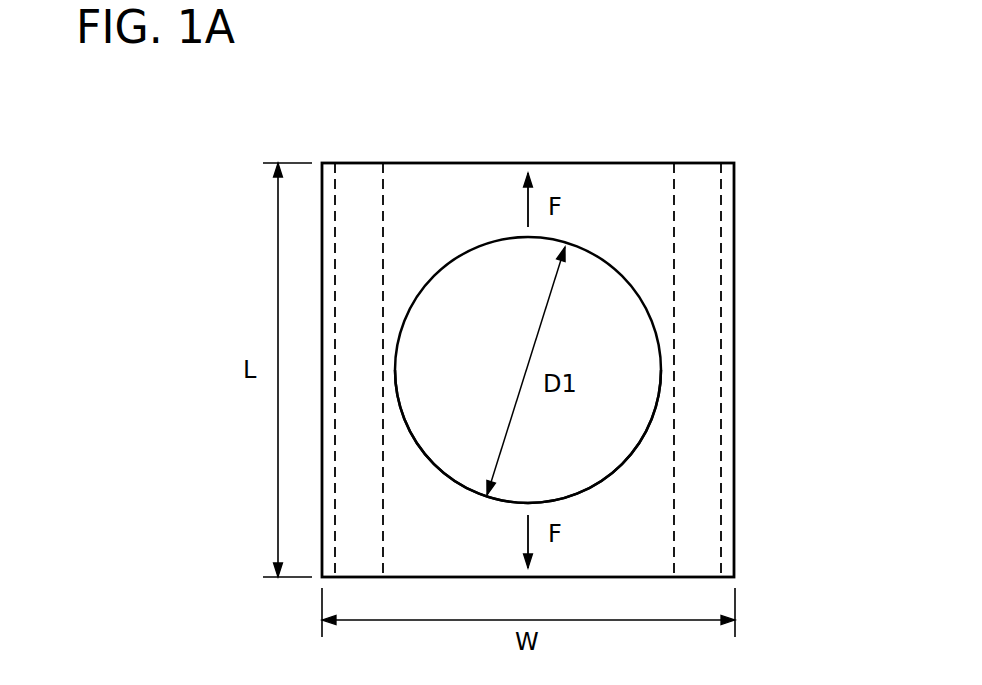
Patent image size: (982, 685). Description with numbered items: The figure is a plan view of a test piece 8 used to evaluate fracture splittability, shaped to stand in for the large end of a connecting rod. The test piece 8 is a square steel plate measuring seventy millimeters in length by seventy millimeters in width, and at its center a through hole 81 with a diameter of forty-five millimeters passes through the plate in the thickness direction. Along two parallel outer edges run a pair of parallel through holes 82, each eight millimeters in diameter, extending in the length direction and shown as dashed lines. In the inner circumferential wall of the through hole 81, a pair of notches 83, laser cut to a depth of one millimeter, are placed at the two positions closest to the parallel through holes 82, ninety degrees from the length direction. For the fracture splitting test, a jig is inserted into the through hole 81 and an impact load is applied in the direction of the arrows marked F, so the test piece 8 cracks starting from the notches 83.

The test piece 8 is at (658, 98).
The through hole 81 is at (624, 280).
The parallel through holes 82 is at (335, 186).
The notches 83 is at (395, 370).